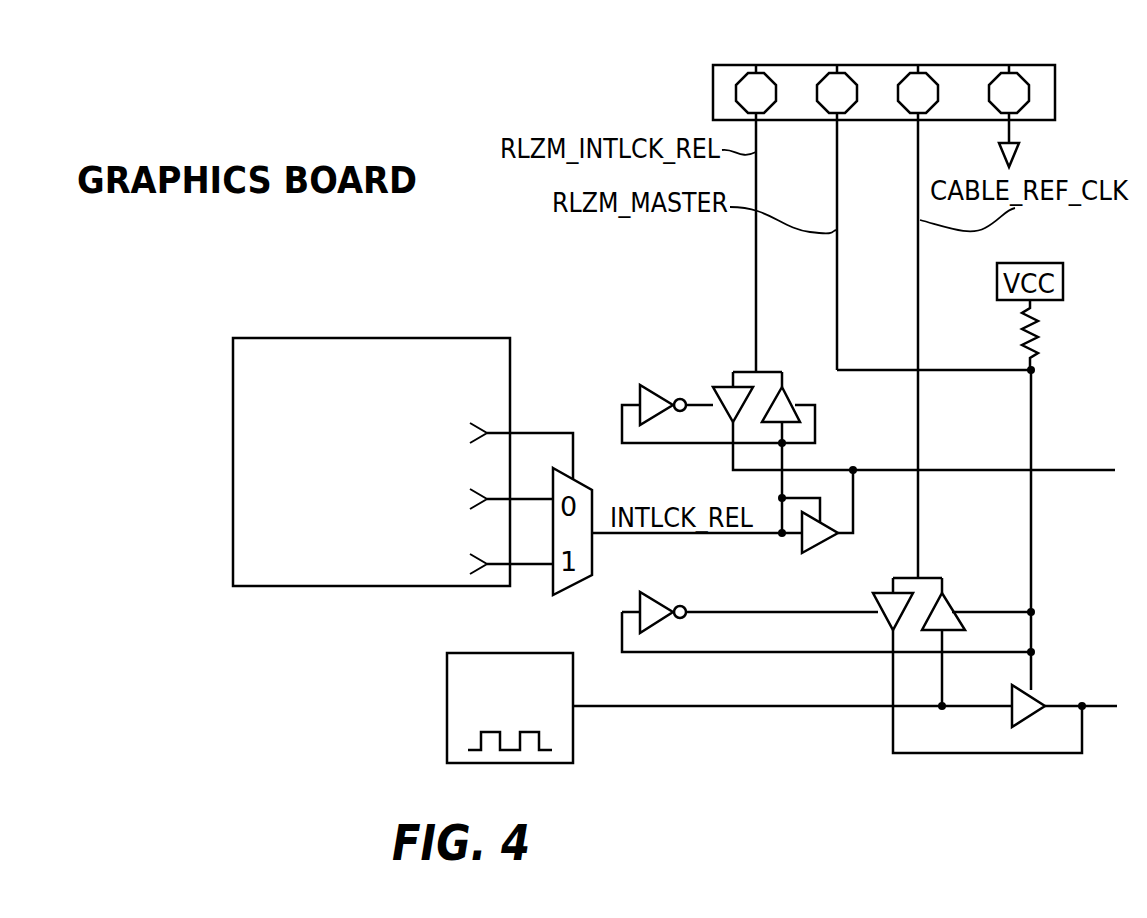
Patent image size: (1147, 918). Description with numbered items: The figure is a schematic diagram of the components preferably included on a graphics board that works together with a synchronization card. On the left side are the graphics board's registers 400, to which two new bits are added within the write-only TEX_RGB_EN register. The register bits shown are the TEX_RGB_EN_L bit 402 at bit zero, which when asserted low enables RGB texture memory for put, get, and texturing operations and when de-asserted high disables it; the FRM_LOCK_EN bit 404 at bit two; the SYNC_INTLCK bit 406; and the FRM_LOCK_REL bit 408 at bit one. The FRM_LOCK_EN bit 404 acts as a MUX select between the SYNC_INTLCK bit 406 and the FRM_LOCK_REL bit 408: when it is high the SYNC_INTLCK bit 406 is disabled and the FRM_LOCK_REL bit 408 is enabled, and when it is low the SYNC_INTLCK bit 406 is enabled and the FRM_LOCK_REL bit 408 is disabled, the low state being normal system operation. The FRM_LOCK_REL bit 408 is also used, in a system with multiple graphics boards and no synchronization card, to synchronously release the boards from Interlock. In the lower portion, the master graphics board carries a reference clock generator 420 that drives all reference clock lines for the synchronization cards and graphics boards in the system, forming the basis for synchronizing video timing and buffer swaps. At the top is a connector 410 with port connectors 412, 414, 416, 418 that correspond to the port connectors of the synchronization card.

The registers 400 is at (268, 305).
The TEX_RGB_EN_L bit 402 is at (286, 365).
The FRM_LOCK_EN bit 404 is at (262, 433).
The SYNC_INTLCK bit 406 is at (305, 500).
The FRM_LOCK_REL bit 408 is at (250, 567).
The connector 410 is at (1043, 73).
The port connector 412 is at (756, 72).
The port connector 414 is at (825, 72).
The port connector 416 is at (906, 72).
The port connector 418 is at (990, 72).
The reference clock generator 420 is at (447, 722).